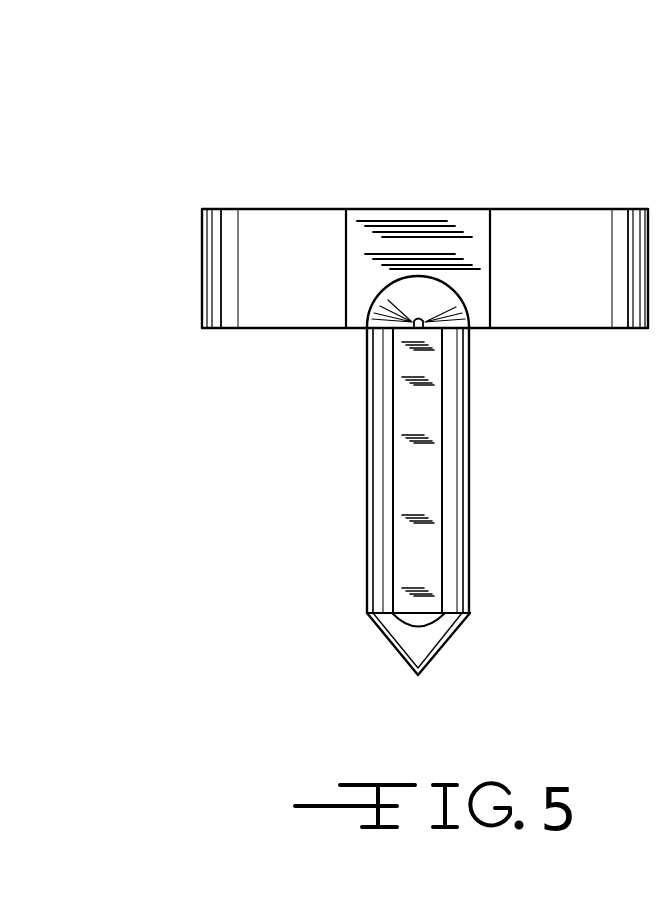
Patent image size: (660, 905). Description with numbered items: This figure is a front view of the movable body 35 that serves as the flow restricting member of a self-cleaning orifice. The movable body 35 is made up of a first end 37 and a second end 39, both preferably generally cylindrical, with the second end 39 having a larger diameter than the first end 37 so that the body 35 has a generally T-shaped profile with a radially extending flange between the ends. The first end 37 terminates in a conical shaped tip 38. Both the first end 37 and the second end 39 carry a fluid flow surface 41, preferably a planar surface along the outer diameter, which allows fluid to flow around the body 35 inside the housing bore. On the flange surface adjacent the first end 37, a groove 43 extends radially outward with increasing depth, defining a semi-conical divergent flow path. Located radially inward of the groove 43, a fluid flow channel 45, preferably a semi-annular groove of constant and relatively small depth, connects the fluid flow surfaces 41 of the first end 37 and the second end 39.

The movable body 35 is at (535, 162).
The first end 37 is at (455, 506).
The conical shaped tip 38 is at (408, 637).
The second end 39 is at (240, 264).
The fluid flow surface 41 is at (394, 228).
The groove 43 is at (402, 298).
The fluid flow channel 45 is at (419, 323).